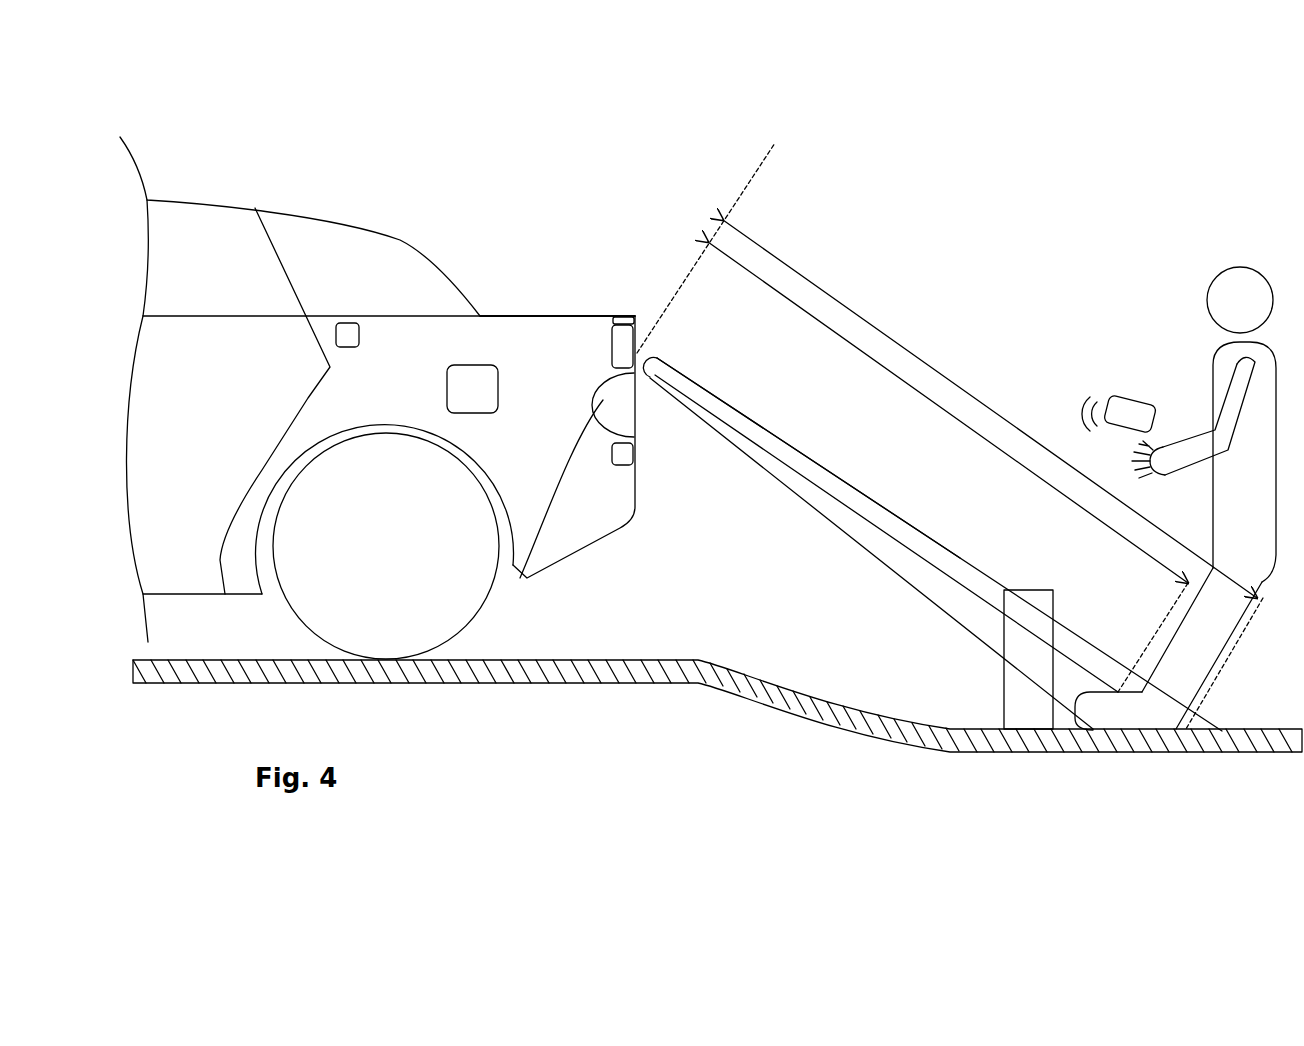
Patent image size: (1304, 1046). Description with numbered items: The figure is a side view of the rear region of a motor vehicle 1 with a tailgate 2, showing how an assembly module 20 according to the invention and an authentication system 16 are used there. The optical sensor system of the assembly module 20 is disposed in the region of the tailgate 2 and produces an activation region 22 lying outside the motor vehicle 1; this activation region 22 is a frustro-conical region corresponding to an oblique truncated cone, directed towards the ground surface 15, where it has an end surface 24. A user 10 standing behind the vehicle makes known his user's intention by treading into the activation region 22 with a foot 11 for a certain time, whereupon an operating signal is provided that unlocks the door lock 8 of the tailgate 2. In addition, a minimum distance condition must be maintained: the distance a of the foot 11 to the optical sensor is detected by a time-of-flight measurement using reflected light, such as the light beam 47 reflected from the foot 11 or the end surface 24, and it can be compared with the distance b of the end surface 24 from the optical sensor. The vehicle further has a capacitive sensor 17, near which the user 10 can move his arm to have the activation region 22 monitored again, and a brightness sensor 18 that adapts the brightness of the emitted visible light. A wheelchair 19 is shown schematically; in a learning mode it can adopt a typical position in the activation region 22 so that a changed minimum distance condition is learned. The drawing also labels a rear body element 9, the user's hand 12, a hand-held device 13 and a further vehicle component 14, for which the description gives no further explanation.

The motor vehicle 1 is at (323, 180).
The tailgate 2 is at (528, 315).
The door lock 8 is at (618, 455).
The rear body contour 9 is at (520, 580).
The user 10 is at (1205, 386).
The foot 11 is at (1103, 711).
The hand of user 12 is at (1165, 464).
The mobile device / key 13 is at (1127, 412).
The control unit 14 is at (478, 383).
The ground surface 15 is at (1250, 752).
The authentication system 16 is at (790, 122).
The capacitive sensor 17 is at (628, 316).
The brightness sensor 18 is at (348, 327).
The wheelchair 19 is at (1040, 600).
The assembly module 20 is at (623, 328).
The activation region 22 is at (858, 522).
The end surface 24 is at (1180, 727).
The light beam 47 is at (740, 438).
The distance a is at (913, 388).
The distance b is at (873, 333).